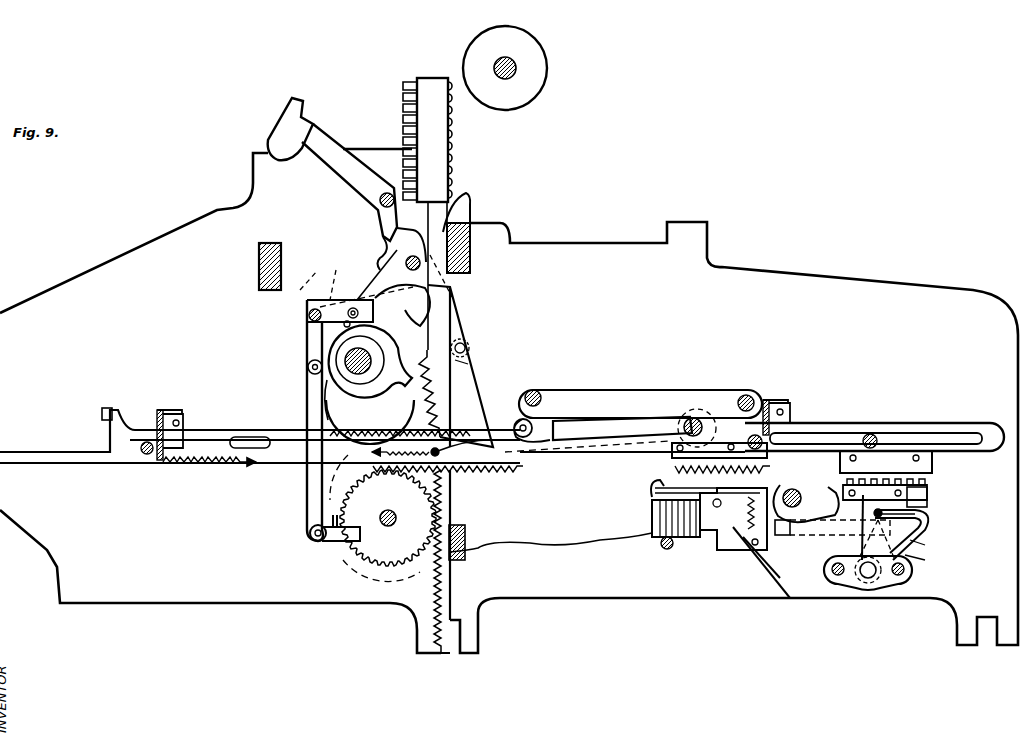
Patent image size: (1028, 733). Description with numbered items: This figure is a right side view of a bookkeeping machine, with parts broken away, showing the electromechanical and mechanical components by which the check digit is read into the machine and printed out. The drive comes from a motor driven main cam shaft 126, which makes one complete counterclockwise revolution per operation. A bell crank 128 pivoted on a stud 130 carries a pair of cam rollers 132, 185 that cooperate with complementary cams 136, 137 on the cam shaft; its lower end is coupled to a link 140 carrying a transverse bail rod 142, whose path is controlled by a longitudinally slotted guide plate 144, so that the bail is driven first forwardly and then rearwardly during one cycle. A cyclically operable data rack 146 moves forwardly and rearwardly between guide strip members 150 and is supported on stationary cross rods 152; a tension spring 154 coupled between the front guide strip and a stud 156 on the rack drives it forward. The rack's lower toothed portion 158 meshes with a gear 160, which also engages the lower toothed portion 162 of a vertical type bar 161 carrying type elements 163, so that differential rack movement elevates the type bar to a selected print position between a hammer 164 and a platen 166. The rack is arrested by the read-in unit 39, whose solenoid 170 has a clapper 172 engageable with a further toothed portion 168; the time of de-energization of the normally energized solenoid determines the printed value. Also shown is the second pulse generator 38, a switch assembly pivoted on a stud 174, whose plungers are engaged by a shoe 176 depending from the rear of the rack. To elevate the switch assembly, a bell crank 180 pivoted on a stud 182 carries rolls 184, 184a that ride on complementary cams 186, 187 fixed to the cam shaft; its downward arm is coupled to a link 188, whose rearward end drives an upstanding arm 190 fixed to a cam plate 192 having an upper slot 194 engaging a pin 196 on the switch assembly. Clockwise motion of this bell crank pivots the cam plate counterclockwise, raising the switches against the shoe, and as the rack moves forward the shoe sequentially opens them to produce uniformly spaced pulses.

The second pulse generator 38 is at (937, 523).
The read-in unit 39 is at (745, 532).
The main cam shaft 126 is at (345, 358).
The bell crank 128 is at (471, 336).
The stud 130 is at (406, 260).
The cam roller 132 is at (469, 348).
The cam 136 is at (349, 303).
The cam 137 is at (336, 407).
The link 140 is at (584, 427).
The bail rod 142 is at (693, 418).
The guide plate 144 is at (631, 413).
The data rack 146 is at (295, 468).
The guide strip member 150 is at (167, 410).
The cross rod 152 is at (147, 456).
The tension spring 154 is at (188, 465).
The stud 156 is at (440, 457).
The lower toothed portion 158 is at (500, 468).
The gear 160 is at (403, 545).
The type bar 161 is at (444, 234).
The lower toothed portion 162 is at (447, 592).
The type elements 163 is at (455, 136).
The hammer 164 is at (304, 132).
The platen 166 is at (543, 72).
The lower toothed portion 168 is at (764, 458).
The solenoid 170 is at (678, 518).
The clapper 172 is at (700, 520).
The stud 174 is at (802, 500).
The shoe 176 is at (928, 497).
The bell crank 180 is at (303, 395).
The stud 182 is at (311, 310).
The roll 184 is at (307, 367).
The roll 184a is at (438, 300).
The cam roller 185 is at (329, 300).
The cam 186 is at (363, 388).
The cam 187 is at (470, 362).
The link 188 is at (336, 542).
The upstanding arm 190 is at (905, 548).
The cam plate 192 is at (926, 560).
The slot 194 is at (930, 545).
The pin 196 is at (930, 512).